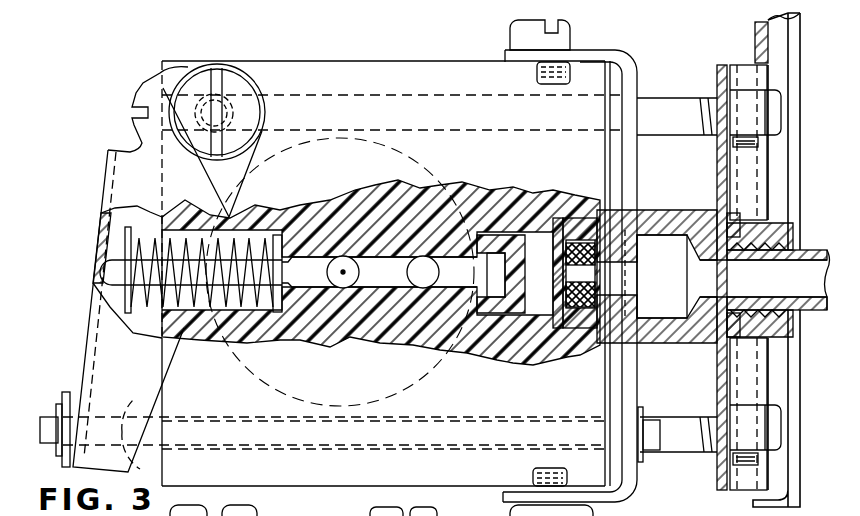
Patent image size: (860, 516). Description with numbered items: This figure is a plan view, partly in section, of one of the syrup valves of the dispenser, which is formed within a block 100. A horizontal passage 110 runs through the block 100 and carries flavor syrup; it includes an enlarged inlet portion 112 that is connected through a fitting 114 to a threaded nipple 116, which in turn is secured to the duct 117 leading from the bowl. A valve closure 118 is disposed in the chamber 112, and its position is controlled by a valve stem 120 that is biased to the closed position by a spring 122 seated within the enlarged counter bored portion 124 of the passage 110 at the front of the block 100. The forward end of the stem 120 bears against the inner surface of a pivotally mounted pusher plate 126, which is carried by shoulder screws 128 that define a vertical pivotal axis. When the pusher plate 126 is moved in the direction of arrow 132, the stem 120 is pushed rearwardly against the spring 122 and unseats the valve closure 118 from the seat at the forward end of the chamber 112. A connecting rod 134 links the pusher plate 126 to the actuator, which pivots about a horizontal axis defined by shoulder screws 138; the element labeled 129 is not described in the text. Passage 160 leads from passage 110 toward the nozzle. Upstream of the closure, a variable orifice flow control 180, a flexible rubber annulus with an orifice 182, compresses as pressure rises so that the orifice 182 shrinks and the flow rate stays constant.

The block 100 is at (335, 66).
The passage 110 is at (467, 230).
The enlarged inlet portion 112 is at (543, 232).
The fitting 114 is at (650, 212).
The threaded nipple 116 is at (690, 344).
The duct 117 is at (817, 315).
The valve closure 118 is at (493, 342).
The valve stem 120 is at (354, 335).
The spring 122 is at (245, 338).
The enlarged counter bored portion 124 is at (217, 317).
The pusher plate 126 is at (96, 245).
The shoulder screws 128 is at (303, 508).
The terminal tab 129 is at (591, 508).
The arrow 132 is at (20, 340).
The connecting rod 134 is at (232, 440).
The shoulder screws 138 is at (582, 34).
The passage 160 is at (428, 352).
The variable orifice flow control 180 is at (595, 217).
The orifice 182 is at (565, 280).